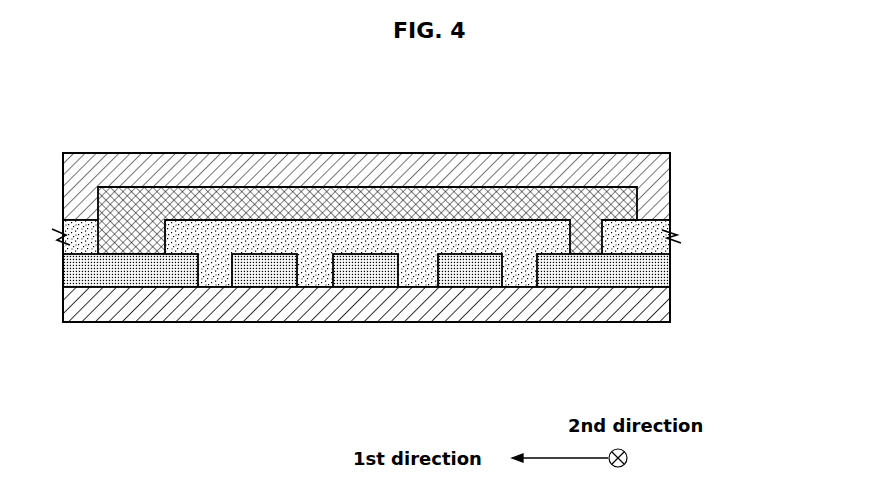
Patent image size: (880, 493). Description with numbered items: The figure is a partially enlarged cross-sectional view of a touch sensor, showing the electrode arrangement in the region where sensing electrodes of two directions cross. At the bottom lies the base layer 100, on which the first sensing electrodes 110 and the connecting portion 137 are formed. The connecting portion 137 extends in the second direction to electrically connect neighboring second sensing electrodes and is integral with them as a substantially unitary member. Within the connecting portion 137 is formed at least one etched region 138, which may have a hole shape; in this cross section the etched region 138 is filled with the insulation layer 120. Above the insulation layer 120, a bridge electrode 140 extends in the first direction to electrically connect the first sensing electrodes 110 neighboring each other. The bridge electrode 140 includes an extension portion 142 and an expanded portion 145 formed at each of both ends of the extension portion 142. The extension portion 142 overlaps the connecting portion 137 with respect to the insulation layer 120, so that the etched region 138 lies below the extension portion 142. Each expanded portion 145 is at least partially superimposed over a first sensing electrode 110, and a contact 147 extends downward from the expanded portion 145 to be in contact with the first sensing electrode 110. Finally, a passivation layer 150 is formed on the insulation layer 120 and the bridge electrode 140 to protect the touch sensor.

The base layer 100 is at (670, 305).
The first sensing electrodes 110 is at (670, 270).
The insulation layer 120 is at (547, 240).
The connecting portion 137 is at (267, 270).
The etched region 138 is at (428, 280).
The bridge electrode 140 is at (263, 202).
The extension portion 142 is at (367, 203).
The expanded portion 145 is at (637, 200).
The contact 147 is at (675, 247).
The passivation layer 150 is at (670, 163).